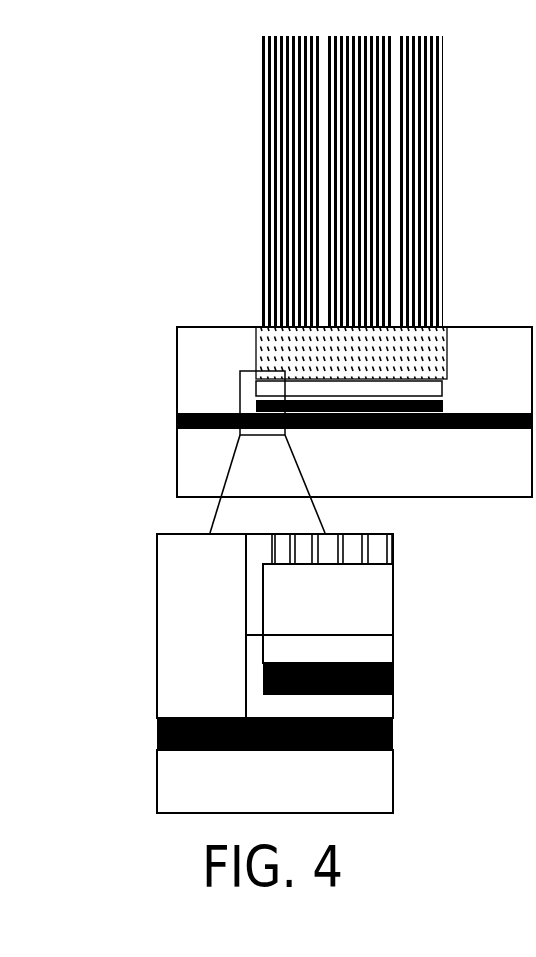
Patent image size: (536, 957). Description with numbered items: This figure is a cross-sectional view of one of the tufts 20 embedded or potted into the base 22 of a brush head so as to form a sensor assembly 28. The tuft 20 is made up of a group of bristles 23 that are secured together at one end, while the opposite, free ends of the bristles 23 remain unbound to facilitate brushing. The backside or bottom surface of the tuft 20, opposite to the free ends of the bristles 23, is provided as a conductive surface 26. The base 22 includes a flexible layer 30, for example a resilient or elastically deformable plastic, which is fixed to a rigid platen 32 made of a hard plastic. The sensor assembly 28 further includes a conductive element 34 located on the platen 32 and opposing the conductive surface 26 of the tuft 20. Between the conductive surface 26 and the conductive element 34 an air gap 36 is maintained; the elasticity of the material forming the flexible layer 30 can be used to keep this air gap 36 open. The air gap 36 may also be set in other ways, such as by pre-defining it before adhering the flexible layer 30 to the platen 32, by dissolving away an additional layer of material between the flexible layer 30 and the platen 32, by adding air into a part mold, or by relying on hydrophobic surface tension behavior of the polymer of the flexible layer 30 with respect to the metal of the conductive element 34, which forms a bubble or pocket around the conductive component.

The tuft 20 is at (204, 109).
The base 22 is at (214, 326).
The bristles 23 is at (443, 124).
The conductive surface 26 is at (410, 408).
The sensor assembly 28 is at (168, 393).
The flexible layer 30 is at (188, 342).
The rigid platen 32 is at (188, 460).
The conductive element 34 is at (455, 428).
The air gap 36 is at (404, 707).